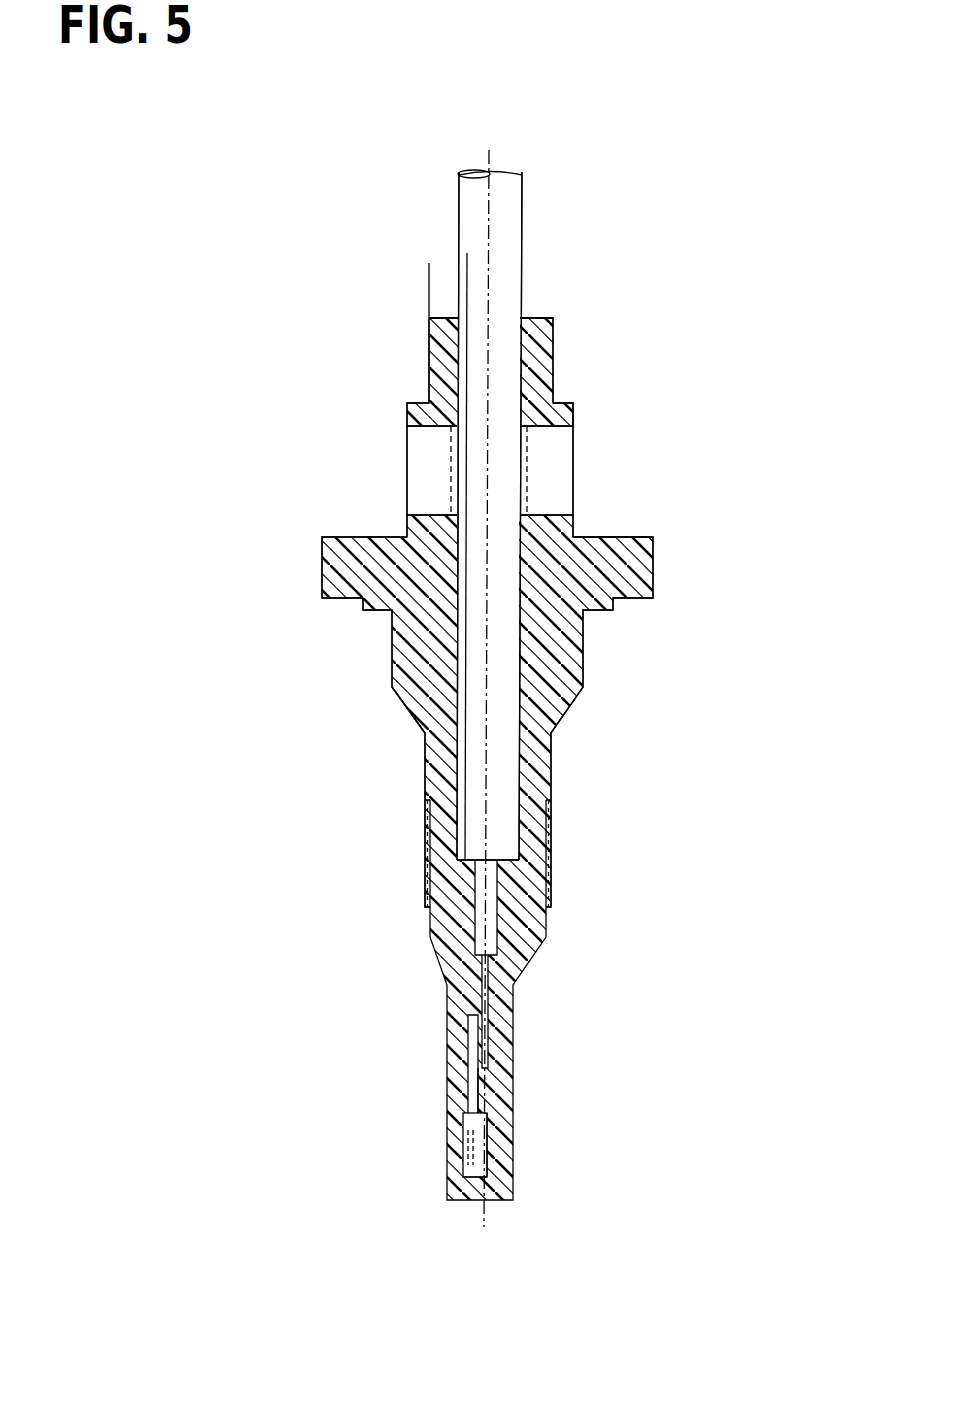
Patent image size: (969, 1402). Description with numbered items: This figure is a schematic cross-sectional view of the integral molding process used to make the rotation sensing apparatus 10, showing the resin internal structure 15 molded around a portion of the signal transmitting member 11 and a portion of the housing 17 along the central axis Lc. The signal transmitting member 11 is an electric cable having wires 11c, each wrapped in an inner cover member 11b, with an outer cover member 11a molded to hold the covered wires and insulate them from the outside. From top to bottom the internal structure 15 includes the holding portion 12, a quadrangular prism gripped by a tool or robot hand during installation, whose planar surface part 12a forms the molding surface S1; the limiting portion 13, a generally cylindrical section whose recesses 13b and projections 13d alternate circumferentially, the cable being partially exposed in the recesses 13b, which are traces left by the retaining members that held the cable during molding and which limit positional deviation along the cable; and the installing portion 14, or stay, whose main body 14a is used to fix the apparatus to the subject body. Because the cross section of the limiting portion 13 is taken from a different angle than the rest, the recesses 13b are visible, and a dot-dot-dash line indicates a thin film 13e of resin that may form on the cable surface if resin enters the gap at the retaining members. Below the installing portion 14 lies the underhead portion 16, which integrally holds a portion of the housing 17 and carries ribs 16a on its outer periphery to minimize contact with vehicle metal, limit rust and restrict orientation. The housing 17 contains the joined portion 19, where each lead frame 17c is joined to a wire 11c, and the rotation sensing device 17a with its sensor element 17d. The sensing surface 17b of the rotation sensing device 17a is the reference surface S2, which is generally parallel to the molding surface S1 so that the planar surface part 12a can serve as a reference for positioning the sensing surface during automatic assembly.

The rotation sensing apparatus 10 is at (313, 245).
The signal transmitting member 11 is at (500, 258).
The cover member 11a is at (488, 827).
The cover members 11b is at (489, 907).
The electric wires 11c is at (493, 975).
The holding portion 12 is at (393, 313).
The planar surface part 12a is at (428, 376).
The limiting portion 13 is at (371, 402).
The recesses 13b is at (435, 430).
The projections 13d is at (547, 492).
The thin film 13e is at (535, 432).
The installing portion 14 is at (319, 537).
The main body 14a is at (621, 560).
The internal structure 15 is at (264, 315).
The underhead portion 16 is at (319, 610).
The ribs 16a is at (572, 672).
The housing 17 is at (354, 797).
The rotation sensing device 17a is at (447, 1113).
The sensing surface 17b is at (467, 1163).
The lead frames 17c is at (475, 1088).
The sensor element 17d is at (490, 1150).
The joined portion 19 is at (517, 1015).
The molding surface S1 is at (428, 287).
The reference surface S2 is at (466, 268).
The central axis Lc is at (491, 671).